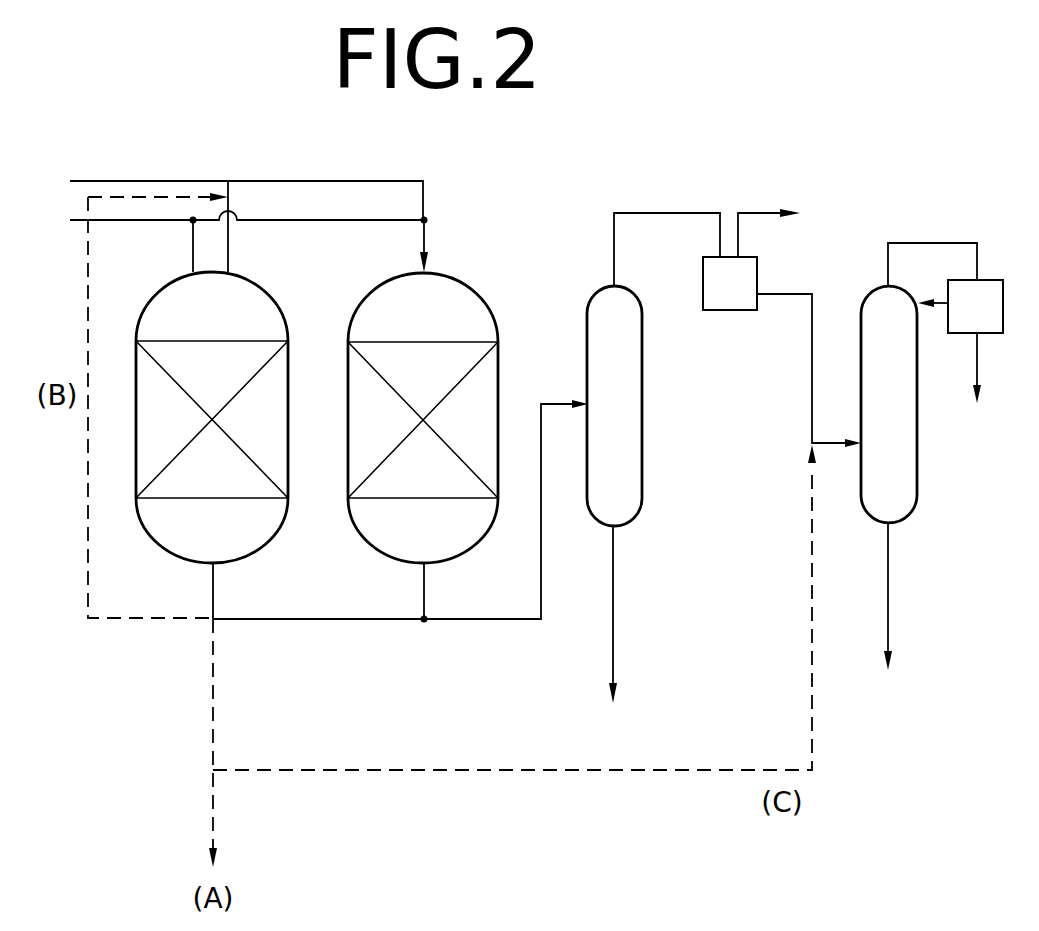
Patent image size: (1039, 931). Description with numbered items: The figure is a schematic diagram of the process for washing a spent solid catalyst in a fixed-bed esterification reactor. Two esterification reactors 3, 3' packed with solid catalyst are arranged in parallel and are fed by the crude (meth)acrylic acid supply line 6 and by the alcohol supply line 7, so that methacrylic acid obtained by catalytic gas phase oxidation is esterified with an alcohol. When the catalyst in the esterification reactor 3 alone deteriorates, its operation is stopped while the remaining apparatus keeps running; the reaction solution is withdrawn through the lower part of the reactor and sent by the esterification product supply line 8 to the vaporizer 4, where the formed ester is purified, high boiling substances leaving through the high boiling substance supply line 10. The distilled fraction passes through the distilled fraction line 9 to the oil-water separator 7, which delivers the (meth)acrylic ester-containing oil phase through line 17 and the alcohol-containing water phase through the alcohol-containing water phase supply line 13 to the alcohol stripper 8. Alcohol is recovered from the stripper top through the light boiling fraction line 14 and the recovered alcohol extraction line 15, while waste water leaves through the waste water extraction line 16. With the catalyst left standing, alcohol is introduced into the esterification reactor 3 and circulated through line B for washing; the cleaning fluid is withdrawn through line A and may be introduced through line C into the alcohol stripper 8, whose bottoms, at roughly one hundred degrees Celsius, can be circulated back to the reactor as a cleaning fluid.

The esterification reactor 3 is at (213, 395).
The esterification reactor 3' is at (423, 392).
The vaporizer 4 is at (631, 428).
The crude (meth)acrylic acid supply line 6 is at (229, 219).
The oil-water separator 7 is at (396, 288).
The alcohol stripper 8 is at (582, 454).
The distilled fraction line 9 is at (667, 232).
The high boiling substance supply line 10 is at (637, 614).
The alcohol-containing water phase supply line 13 is at (809, 370).
The light boiling fraction line 14 is at (945, 272).
The recovered alcohol extraction line 15 is at (978, 387).
The waste water extraction line 16 is at (890, 617).
The (meth)acrylic ester-containing oil phase supply line 17 is at (788, 227).